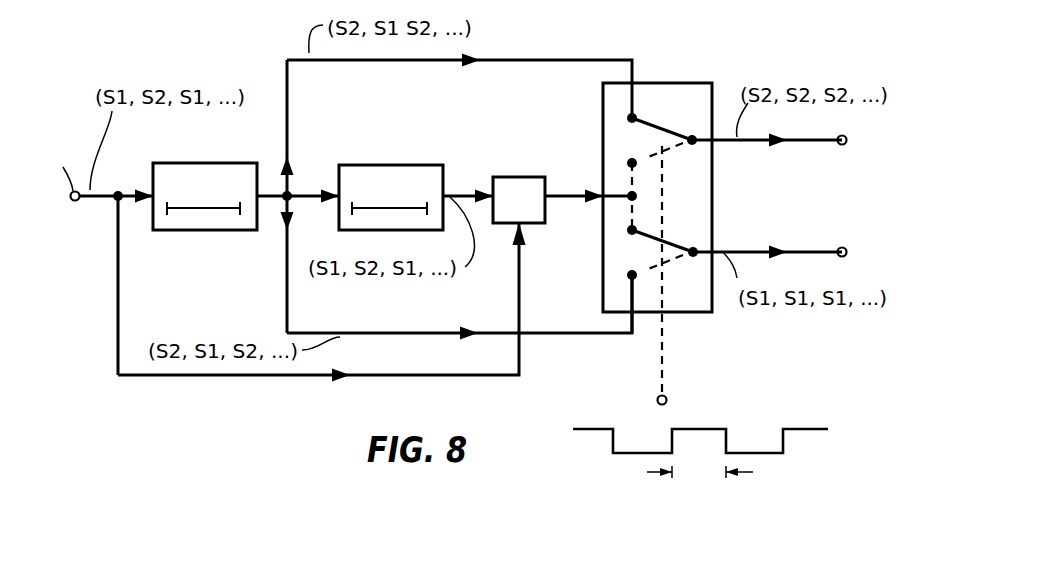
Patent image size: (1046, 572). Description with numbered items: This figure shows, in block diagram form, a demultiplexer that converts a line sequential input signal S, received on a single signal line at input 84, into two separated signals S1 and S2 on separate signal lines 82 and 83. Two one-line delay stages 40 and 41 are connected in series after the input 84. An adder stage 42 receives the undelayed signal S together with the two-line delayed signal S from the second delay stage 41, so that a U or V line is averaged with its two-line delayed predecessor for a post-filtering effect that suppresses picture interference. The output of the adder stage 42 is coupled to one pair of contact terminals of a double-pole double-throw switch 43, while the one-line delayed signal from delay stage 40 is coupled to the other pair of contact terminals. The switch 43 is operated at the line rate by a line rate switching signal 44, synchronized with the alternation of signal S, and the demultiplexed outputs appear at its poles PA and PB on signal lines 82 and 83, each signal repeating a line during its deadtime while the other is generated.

The 1 H line-delay stage 40 is at (205, 184).
The 1 H line-delay stage 41 is at (391, 184).
The adder stage 42 is at (519, 180).
The double-pole double-throw switch 43 is at (657, 228).
The line rate switching signal 44 is at (704, 457).
The signal line 82 is at (802, 248).
The signal line 83 is at (813, 145).
The input 84 is at (76, 201).